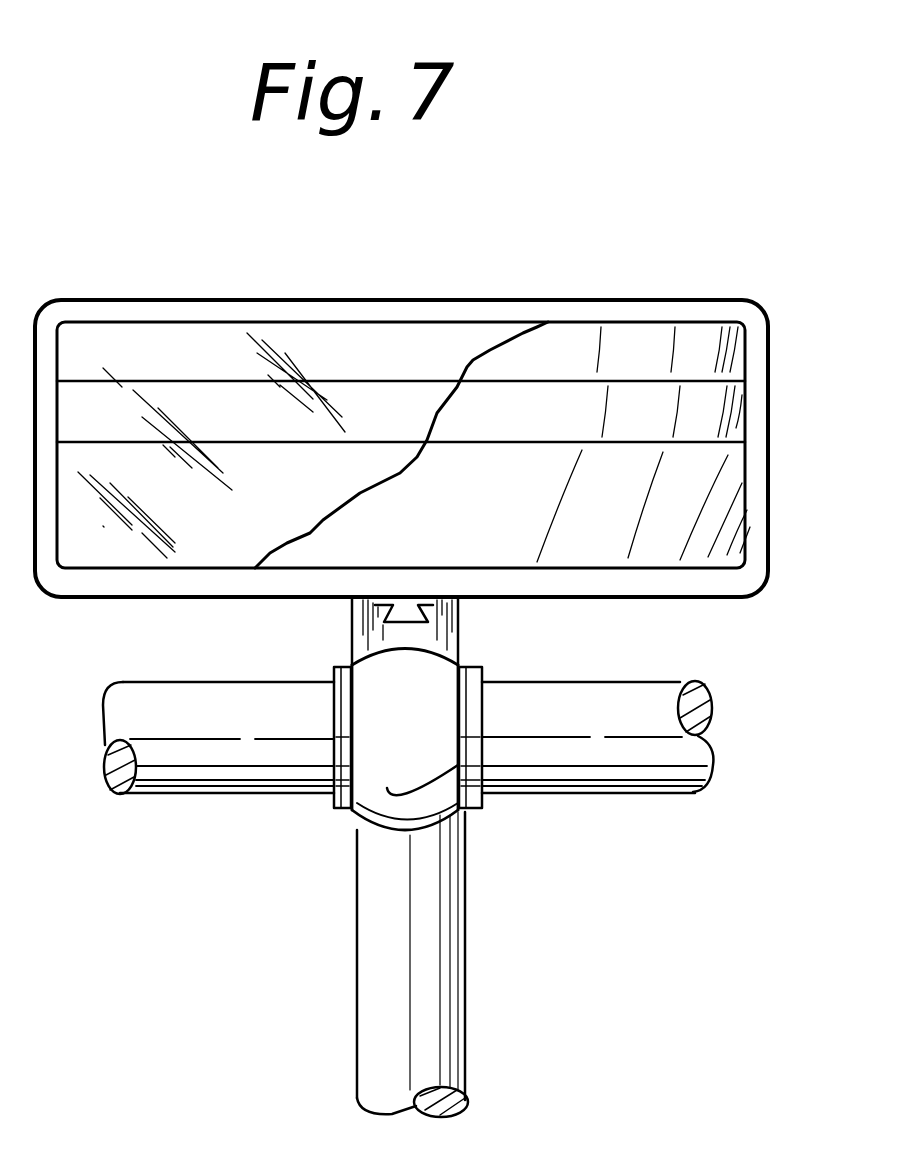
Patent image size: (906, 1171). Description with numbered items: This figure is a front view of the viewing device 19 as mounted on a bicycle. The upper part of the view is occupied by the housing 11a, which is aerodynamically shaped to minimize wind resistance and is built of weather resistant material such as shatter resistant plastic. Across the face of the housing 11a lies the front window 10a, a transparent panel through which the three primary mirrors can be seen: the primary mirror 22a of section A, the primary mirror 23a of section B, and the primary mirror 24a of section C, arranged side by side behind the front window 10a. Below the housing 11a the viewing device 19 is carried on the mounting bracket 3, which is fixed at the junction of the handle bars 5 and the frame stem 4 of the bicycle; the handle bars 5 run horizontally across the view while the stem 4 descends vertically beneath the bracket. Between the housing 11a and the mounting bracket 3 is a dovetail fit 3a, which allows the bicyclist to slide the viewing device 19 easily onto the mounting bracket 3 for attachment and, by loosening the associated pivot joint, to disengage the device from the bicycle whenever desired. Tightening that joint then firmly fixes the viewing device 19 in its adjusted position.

The viewing device 19 is at (805, 224).
The housing 11a is at (88, 310).
The front window 10a is at (225, 342).
The primary mirror of section B 23a is at (477, 400).
The primary mirror of section C 24a is at (580, 340).
The primary mirror of section A 22a is at (567, 550).
The mounting bracket 3 is at (358, 624).
The dovetail fit 3a is at (413, 620).
The handle bars 5 is at (660, 697).
The frame stem 4 is at (372, 973).